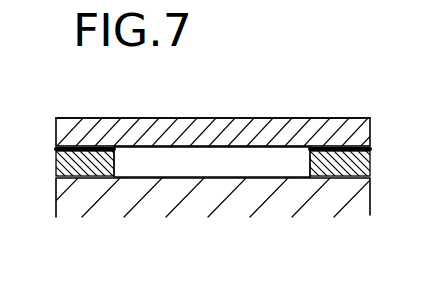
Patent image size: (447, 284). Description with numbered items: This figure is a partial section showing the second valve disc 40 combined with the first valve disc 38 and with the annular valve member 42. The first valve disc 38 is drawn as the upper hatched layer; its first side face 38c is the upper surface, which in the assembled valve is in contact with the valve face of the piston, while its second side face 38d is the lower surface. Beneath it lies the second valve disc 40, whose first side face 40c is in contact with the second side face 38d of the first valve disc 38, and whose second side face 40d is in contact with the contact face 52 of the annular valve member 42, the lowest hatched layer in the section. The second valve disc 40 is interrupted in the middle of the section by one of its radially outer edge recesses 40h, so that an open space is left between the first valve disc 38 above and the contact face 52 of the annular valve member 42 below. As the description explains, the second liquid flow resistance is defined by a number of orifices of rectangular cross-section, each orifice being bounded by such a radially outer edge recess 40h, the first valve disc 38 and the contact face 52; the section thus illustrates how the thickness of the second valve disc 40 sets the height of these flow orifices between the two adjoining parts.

The first valve disc 38 is at (326, 118).
The first side face 38c is at (133, 113).
The second side face 38d is at (245, 153).
The second valve disc 40 is at (222, 187).
The first side face 40c is at (319, 178).
The second side face 40d is at (84, 173).
The radially outer edge recesses 40h is at (208, 142).
The annular valve member 42 is at (344, 196).
The contact face 52 is at (146, 174).